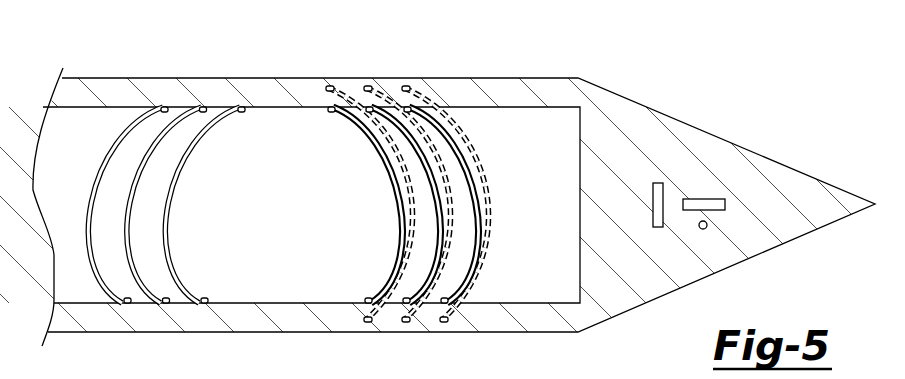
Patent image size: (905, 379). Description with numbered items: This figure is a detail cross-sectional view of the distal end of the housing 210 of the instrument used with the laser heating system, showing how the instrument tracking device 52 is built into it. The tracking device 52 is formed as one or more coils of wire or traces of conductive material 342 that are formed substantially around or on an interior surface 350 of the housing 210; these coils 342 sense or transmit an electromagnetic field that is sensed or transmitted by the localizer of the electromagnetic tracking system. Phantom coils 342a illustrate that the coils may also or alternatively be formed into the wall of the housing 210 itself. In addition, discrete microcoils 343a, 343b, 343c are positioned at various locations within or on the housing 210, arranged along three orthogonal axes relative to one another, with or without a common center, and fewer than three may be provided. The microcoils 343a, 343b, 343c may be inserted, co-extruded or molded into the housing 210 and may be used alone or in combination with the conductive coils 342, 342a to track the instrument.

The housing 210 is at (535, 58).
The instrument tracking device 52 is at (110, 124).
The coils of conductive material 342 is at (382, 164).
The phantom coils 342a is at (425, 86).
The interior surface 350 is at (530, 194).
The microcoil 343a is at (658, 183).
The microcoil 343b is at (712, 199).
The microcoil 343c is at (708, 225).